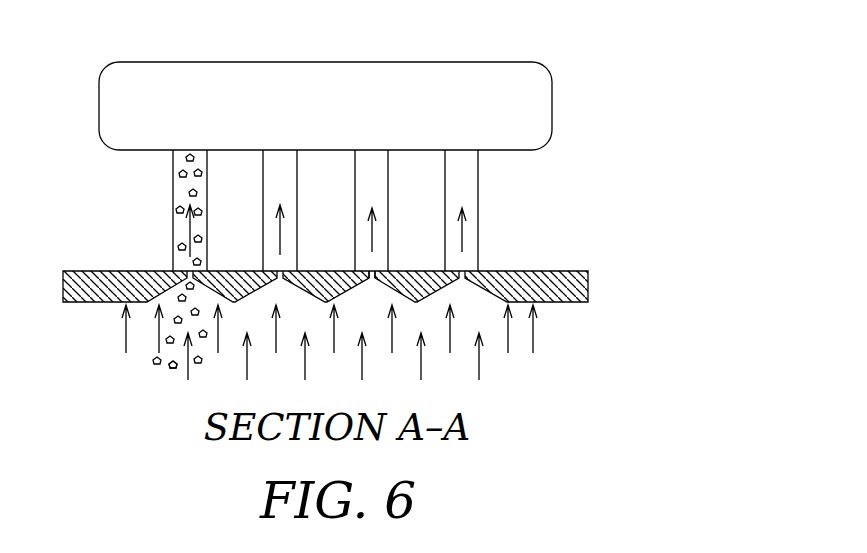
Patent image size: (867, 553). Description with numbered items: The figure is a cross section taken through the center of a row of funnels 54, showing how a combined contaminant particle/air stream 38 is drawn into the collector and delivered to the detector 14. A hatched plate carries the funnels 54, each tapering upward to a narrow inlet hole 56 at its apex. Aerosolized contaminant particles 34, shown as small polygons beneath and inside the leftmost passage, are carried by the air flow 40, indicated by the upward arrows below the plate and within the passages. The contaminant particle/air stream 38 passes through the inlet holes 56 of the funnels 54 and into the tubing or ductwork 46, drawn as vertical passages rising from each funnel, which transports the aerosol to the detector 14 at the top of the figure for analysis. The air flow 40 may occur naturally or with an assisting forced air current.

The detector 14 is at (213, 62).
The contaminant particles 34 is at (173, 368).
The combined contaminant particle/air stream 38 is at (183, 200).
The air flow 40 is at (460, 222).
The tubing or ductwork 46 is at (478, 233).
The funnels 54 is at (487, 290).
The inlet holes 56 is at (372, 278).